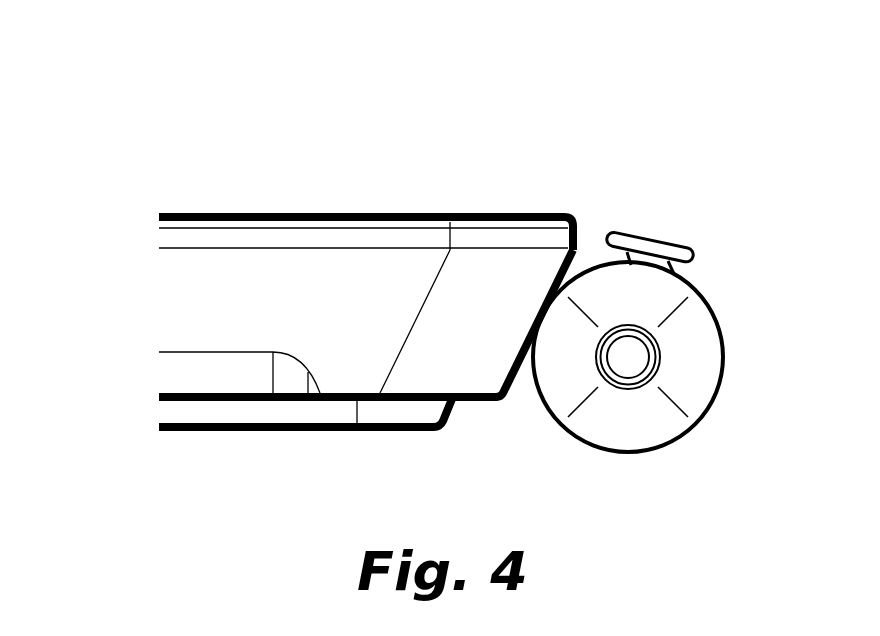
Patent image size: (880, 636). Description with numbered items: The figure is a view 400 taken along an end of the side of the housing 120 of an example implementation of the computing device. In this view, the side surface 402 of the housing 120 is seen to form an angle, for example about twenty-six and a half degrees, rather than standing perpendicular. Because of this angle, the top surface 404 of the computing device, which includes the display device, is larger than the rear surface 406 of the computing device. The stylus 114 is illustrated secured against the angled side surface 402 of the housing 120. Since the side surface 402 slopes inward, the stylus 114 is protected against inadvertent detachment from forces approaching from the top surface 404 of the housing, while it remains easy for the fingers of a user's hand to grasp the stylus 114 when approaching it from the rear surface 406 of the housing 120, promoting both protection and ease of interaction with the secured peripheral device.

The view 400 is at (146, 88).
The top surface 404 is at (374, 181).
The side surface 402 is at (536, 318).
The rear surface 406 is at (365, 447).
The stylus 114 is at (716, 332).
The housing 120 is at (552, 147).